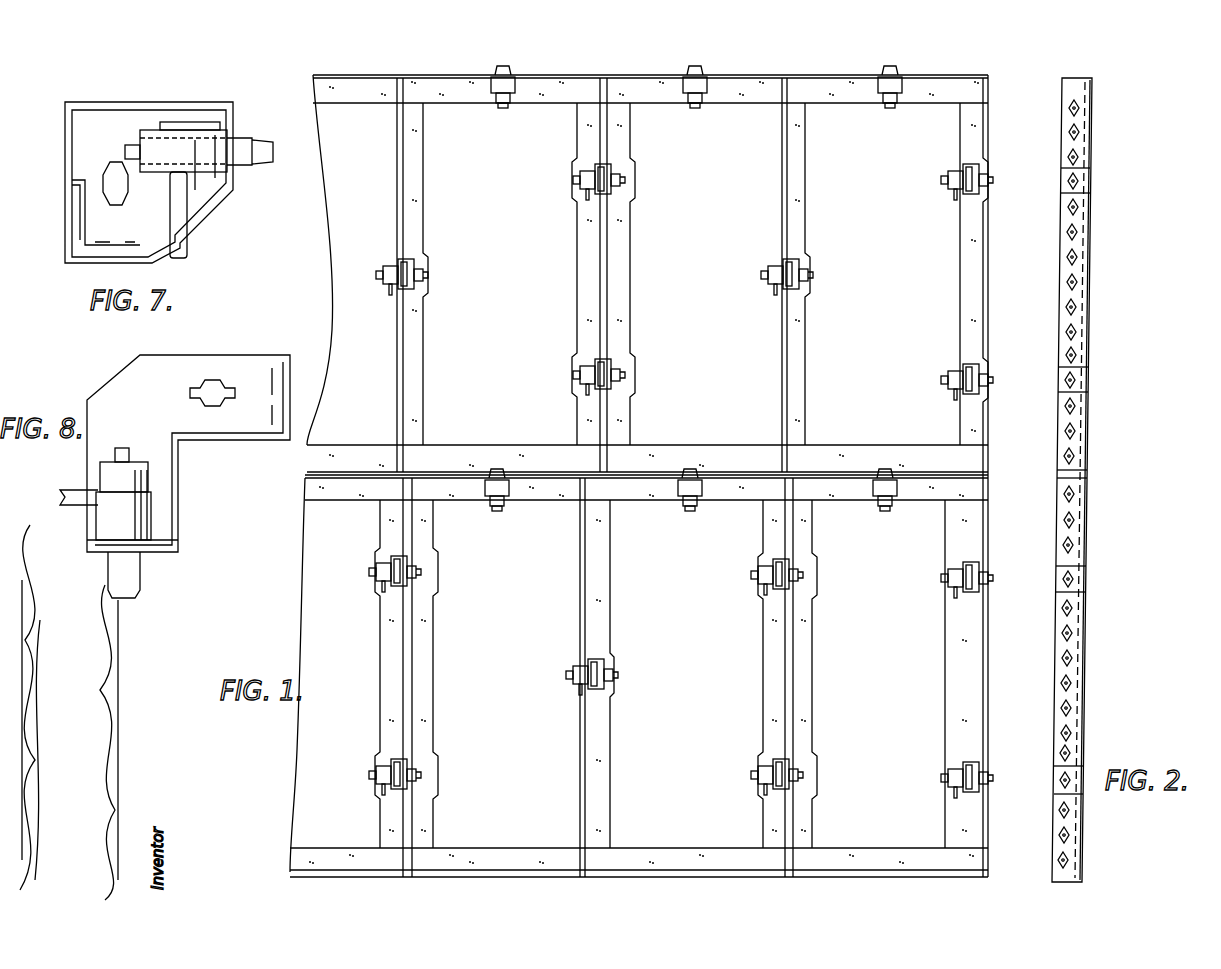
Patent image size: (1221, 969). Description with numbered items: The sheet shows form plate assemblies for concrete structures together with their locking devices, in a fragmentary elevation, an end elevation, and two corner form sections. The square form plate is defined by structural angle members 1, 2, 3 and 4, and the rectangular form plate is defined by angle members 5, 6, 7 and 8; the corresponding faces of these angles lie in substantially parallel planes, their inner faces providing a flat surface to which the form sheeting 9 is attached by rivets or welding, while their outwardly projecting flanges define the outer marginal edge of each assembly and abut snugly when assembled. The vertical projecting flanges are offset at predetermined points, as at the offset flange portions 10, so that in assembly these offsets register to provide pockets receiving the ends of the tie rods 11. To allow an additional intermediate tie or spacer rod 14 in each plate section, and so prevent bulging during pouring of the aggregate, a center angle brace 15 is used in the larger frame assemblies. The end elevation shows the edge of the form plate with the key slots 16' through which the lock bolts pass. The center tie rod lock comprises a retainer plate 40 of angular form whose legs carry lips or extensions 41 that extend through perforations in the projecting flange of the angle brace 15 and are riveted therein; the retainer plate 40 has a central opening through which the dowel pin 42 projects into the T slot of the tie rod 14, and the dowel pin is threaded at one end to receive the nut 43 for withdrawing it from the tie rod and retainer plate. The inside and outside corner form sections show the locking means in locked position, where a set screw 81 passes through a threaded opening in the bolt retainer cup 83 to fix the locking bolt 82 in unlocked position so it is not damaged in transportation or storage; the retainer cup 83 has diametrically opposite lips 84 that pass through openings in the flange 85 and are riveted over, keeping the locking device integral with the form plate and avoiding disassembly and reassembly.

In FIG. 1, the angle member 1 is at (728, 445).
In FIG. 1, the angle member 2 is at (625, 232).
In FIG. 1, the angle member 3 is at (750, 103).
In FIG. 1, the angle member 4 is at (963, 254).
In FIG. 2, the angle member 4 is at (1064, 295).
In FIG. 1, the angle member 5 is at (850, 855).
In FIG. 1, the angle member 6 is at (805, 678).
In FIG. 1, the angle member 7 is at (912, 500).
In FIG. 1, the angle member 8 is at (955, 640).
In FIG. 2, the angle member 8 is at (1060, 620).
In FIG. 1, the form sheeting 9 is at (872, 317).
In FIG. 1, the offset flange portion 10 is at (985, 182).
In FIG. 1, the tie rod 11 is at (400, 587).
In FIG. 1, the intermediate tie or spacer rod 14 is at (413, 287).
In FIG. 1, the center angle brace 15 is at (790, 374).
In FIG. 2, the key slot 16' is at (1049, 484).
In FIG. 1, the retainer plate 40 is at (605, 660).
In FIG. 1, the lip or extension 41 is at (580, 660).
In FIG. 1, the dowel pin 42 is at (612, 678).
In FIG. 1, the nut 43 is at (568, 680).
In FIG. 7, the set screw 81 is at (200, 200).
In FIG. 8, the set screw 81 is at (92, 526).
In FIG. 7, the locking bolt 82 is at (235, 140).
In FIG. 8, the locking bolt 82 is at (128, 568).
In FIG. 7, the bolt retainer cup 83 is at (190, 122).
In FIG. 8, the bolt retainer cup 83 is at (135, 535).
In FIG. 7, the lip 84 is at (237, 103).
In FIG. 7, the flange 85 is at (232, 192).